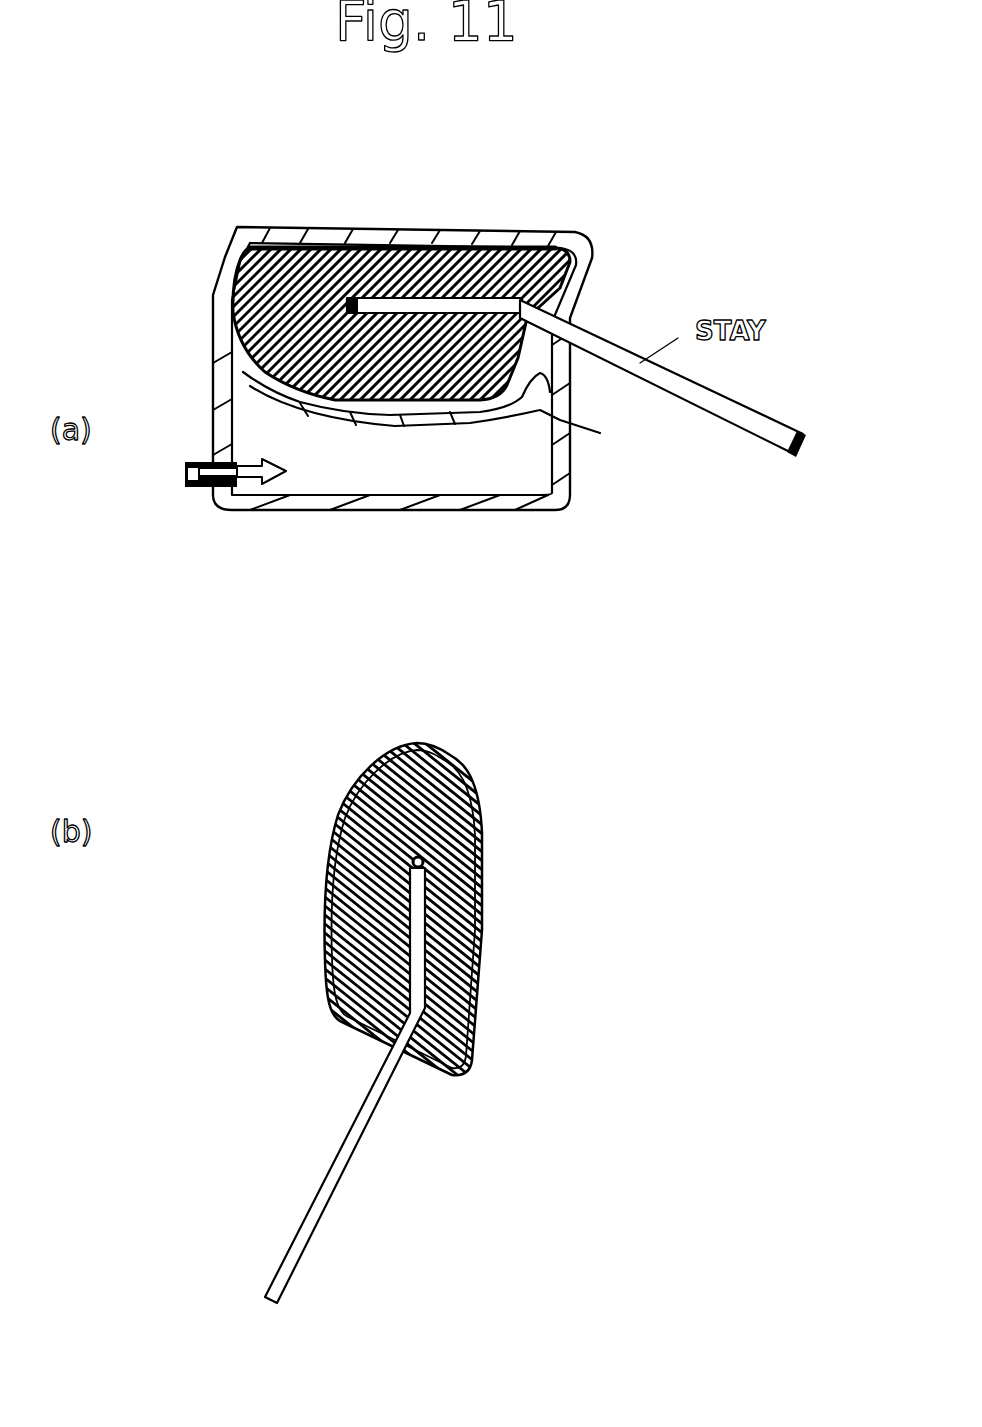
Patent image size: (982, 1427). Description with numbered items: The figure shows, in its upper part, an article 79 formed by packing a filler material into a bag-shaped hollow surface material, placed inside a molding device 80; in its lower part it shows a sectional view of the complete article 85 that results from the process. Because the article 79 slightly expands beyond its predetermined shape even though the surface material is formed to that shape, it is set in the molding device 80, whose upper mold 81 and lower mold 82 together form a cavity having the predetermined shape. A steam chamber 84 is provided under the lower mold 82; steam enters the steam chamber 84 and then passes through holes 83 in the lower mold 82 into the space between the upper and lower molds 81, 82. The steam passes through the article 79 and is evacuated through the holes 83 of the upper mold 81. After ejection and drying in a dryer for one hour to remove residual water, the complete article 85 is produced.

The article 79 is at (343, 228).
The molding device 80 is at (520, 236).
The upper mold 81 is at (588, 260).
The lower mold 82 is at (222, 360).
The holes 83 is at (432, 232).
The steam chamber 84 is at (440, 508).
The complete article 85 is at (458, 800).